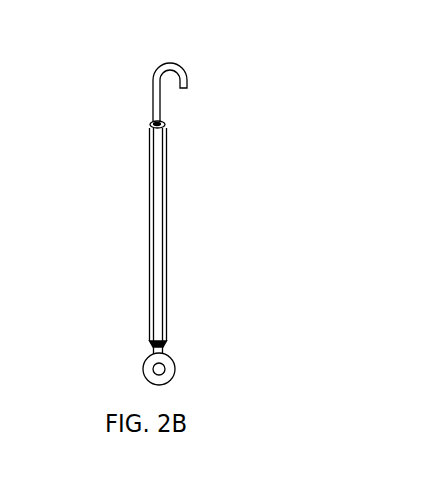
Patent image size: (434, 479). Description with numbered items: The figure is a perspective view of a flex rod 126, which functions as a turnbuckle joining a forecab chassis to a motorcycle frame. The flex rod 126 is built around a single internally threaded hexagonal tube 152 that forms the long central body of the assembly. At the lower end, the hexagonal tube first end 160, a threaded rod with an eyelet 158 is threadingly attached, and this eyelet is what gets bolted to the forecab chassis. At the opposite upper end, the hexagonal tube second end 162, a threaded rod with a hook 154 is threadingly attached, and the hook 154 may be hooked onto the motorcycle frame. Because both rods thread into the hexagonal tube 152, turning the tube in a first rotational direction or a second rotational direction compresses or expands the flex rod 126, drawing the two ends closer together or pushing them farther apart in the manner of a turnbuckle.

The flex rod 126 is at (137, 41).
The hexagonal tube 152 is at (145, 177).
The threaded rod with a hook 154 is at (200, 70).
The threaded rod with an eyelet 158 is at (173, 360).
The hexagonal tube first end 160 is at (182, 343).
The hexagonal tube second end 162 is at (172, 125).